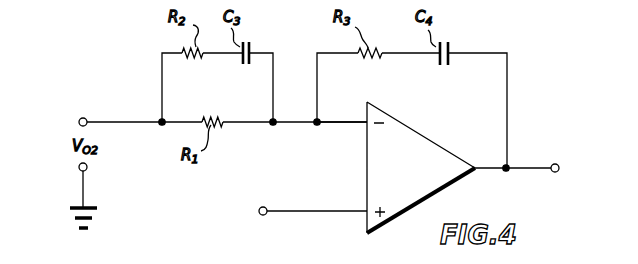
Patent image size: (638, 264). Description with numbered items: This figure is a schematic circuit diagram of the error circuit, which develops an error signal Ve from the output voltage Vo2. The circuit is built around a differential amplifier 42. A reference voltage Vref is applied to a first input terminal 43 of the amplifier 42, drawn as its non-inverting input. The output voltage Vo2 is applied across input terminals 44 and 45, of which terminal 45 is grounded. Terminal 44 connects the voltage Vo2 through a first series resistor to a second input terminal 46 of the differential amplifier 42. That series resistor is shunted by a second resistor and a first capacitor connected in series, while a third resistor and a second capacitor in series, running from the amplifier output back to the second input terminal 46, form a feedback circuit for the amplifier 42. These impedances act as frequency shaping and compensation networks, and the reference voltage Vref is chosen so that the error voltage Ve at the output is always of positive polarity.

The differential amplifier 42 is at (422, 147).
The first input terminal 43 is at (327, 210).
The input terminal 44 is at (80, 120).
The input terminal 45 is at (79, 167).
The second input terminal 46 is at (344, 126).